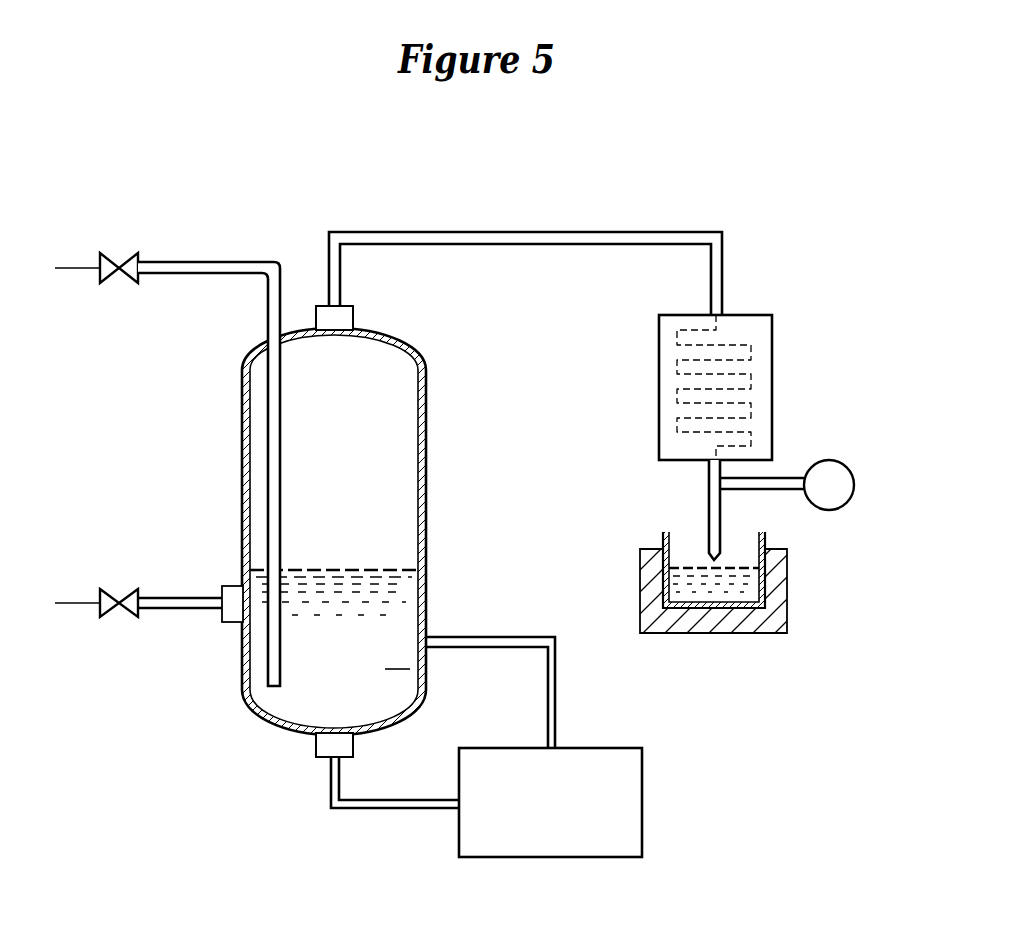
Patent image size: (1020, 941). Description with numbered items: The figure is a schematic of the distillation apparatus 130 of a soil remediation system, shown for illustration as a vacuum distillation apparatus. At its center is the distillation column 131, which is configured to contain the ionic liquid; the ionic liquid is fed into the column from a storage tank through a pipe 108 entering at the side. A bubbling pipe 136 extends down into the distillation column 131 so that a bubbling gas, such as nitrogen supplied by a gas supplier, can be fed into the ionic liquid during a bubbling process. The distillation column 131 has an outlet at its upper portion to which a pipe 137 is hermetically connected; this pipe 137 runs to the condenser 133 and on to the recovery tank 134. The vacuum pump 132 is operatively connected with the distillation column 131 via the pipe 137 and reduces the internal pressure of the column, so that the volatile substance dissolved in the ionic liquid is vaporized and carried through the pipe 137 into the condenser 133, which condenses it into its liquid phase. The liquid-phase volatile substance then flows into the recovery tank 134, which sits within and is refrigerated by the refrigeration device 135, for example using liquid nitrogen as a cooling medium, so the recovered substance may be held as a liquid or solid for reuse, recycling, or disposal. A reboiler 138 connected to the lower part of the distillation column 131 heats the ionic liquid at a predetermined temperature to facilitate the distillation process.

The distillation apparatus 130 is at (549, 188).
The distillation column 131 is at (243, 437).
The bubbling pipe 136 is at (213, 262).
The pipe 108 is at (178, 598).
The pipe 137 is at (680, 232).
The condenser 133 is at (772, 348).
The vacuum pump 132 is at (828, 460).
The recovery tank 134 is at (767, 537).
The refrigeration device 135 is at (788, 610).
The reboiler 138 is at (642, 800).